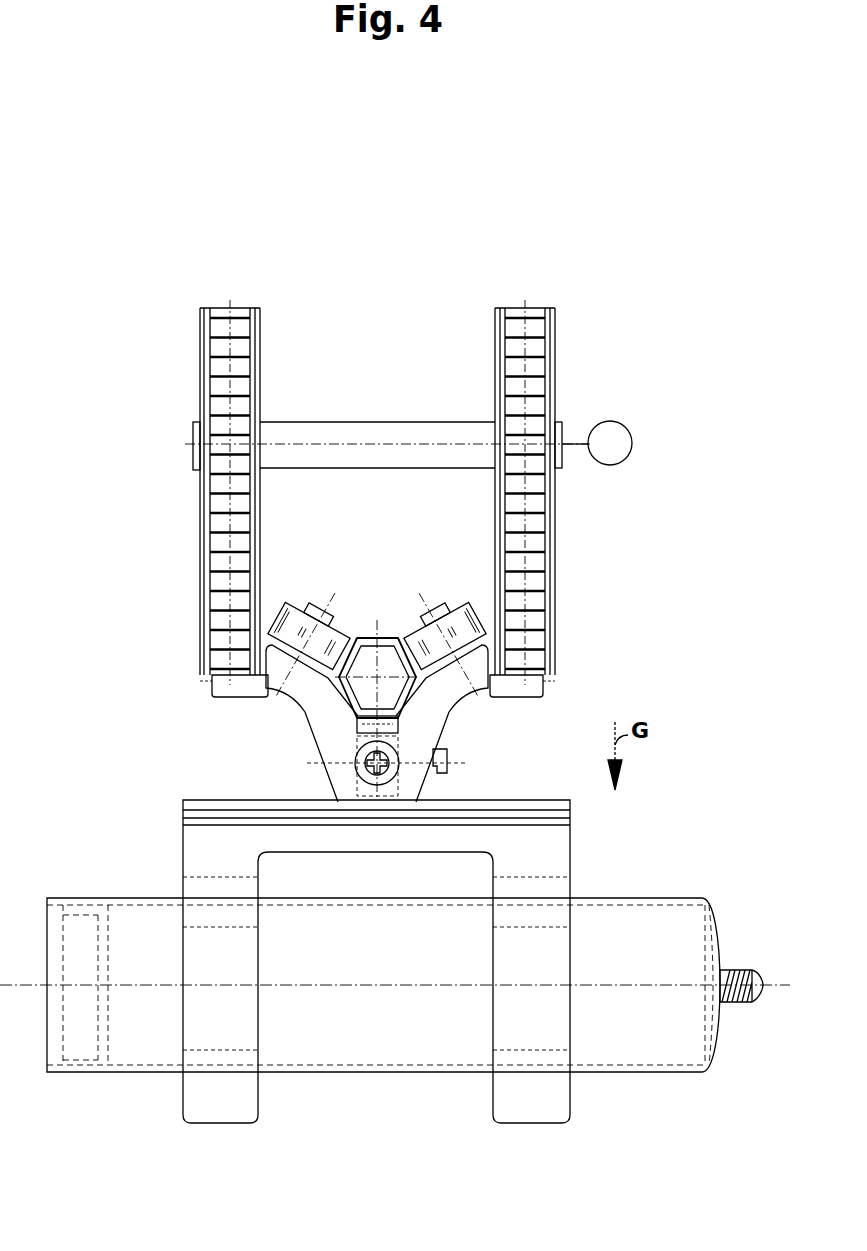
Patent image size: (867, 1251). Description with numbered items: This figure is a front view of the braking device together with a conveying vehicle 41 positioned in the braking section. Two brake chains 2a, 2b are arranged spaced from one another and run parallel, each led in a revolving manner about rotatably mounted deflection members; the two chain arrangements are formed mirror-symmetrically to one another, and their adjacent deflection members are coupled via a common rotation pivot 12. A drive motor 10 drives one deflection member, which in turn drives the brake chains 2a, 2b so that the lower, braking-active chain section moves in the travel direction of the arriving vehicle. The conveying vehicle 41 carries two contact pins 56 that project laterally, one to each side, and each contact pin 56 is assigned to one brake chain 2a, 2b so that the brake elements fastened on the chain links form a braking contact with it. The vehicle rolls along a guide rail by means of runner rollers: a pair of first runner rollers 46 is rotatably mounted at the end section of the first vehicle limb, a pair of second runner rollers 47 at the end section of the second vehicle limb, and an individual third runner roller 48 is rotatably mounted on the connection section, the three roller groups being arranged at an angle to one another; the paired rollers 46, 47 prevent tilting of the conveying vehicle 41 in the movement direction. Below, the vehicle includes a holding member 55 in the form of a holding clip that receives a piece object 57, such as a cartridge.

The brake chain 2b is at (240, 282).
The brake chain 2a is at (517, 282).
The common rotation pivot 12 is at (327, 434).
The drive motor 10 is at (612, 423).
The first runner rollers 46 is at (288, 626).
The second runner rollers 47 is at (510, 630).
The contact pin 56 is at (222, 688).
The conveying vehicle 41 is at (290, 732).
The third runner roller 48 is at (400, 728).
The holding member 55 is at (543, 840).
The piece object 57 is at (401, 1030).